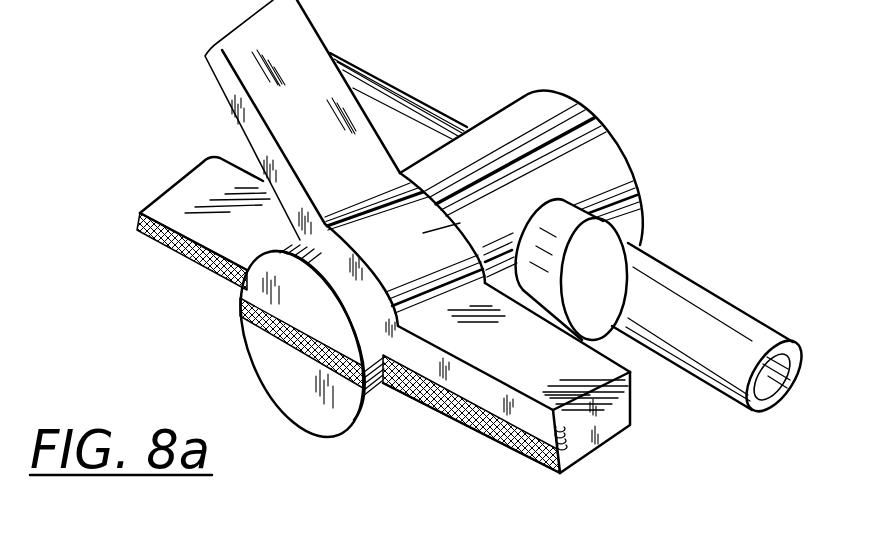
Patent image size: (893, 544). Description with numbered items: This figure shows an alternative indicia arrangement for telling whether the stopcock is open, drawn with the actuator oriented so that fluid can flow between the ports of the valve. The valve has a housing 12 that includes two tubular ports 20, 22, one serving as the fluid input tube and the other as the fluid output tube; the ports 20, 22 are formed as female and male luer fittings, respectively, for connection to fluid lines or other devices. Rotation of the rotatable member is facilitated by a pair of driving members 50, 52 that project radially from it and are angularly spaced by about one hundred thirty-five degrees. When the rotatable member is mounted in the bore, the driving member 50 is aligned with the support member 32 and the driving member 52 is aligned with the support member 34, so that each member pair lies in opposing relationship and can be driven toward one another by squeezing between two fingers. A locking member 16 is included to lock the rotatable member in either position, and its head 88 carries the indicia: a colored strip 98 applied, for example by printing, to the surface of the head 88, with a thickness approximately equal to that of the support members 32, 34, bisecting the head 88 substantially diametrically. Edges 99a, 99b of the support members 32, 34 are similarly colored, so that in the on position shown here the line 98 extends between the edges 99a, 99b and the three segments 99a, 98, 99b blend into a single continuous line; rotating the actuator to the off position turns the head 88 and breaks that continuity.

The housing 12 is at (580, 108).
The locking member 16 is at (366, 421).
The tubular port 20 is at (380, 83).
The tubular port 22 is at (710, 290).
The support member 32 is at (136, 213).
The support member 34 is at (586, 447).
The driving member 50 is at (216, 70).
The driving member 52 is at (613, 400).
The head 88 is at (312, 407).
The colored strip 98 is at (255, 340).
The edge 99a is at (167, 247).
The edge 99b is at (512, 450).